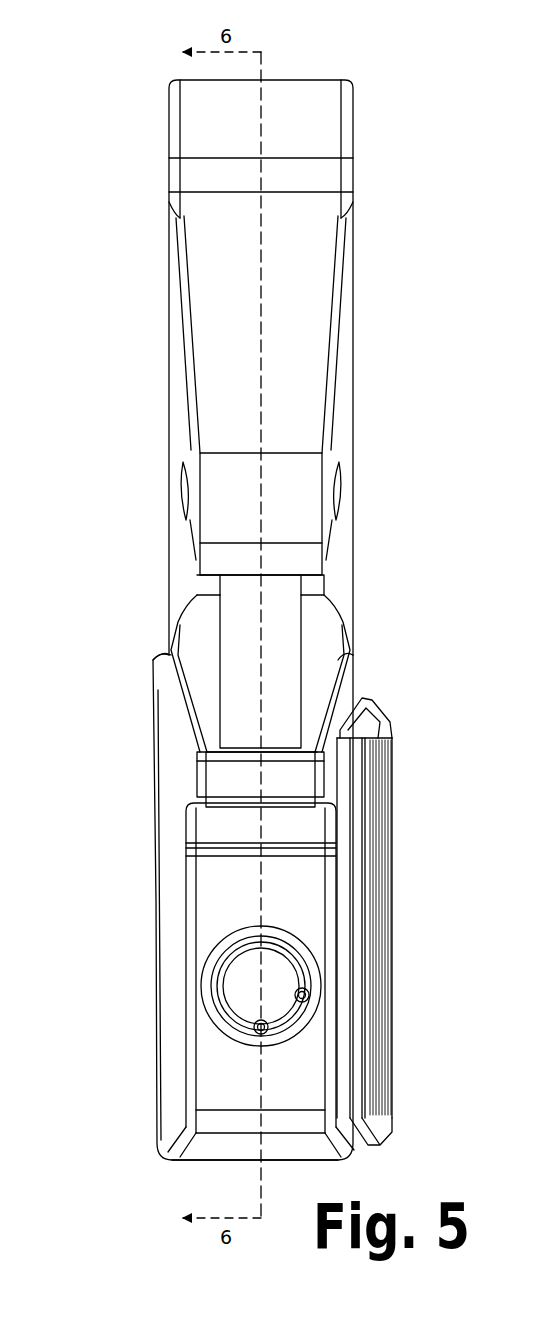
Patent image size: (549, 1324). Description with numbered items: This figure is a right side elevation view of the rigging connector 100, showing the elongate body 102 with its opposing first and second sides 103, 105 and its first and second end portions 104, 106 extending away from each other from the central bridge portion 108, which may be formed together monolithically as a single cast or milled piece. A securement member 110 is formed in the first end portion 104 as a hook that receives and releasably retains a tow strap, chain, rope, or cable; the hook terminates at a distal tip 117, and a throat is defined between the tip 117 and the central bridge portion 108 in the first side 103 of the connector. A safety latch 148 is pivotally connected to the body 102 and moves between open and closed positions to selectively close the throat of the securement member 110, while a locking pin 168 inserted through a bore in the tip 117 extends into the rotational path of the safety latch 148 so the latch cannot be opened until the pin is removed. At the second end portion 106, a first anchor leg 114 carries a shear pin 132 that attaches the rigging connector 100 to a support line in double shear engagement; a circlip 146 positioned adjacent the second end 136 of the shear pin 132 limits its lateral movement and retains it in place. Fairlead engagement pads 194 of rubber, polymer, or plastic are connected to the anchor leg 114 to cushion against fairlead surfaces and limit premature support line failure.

The rigging connector 100 is at (141, 86).
The first end portion 104 is at (388, 76).
The elongate body 102 is at (353, 286).
The securement member 110 is at (222, 330).
The locking pin 168 is at (345, 492).
The distal tip 117 is at (221, 570).
The safety latch 148 is at (245, 640).
The central bridge portion 108 is at (323, 585).
The second side 105 is at (384, 596).
The first side 103 is at (130, 634).
The first anchor leg 114 is at (222, 886).
The fairlead engagement pads 194 is at (390, 812).
The shear pin 132 is at (235, 982).
The second end 136 is at (238, 1003).
The circlip 146 is at (308, 989).
The second end portion 106 is at (140, 1173).